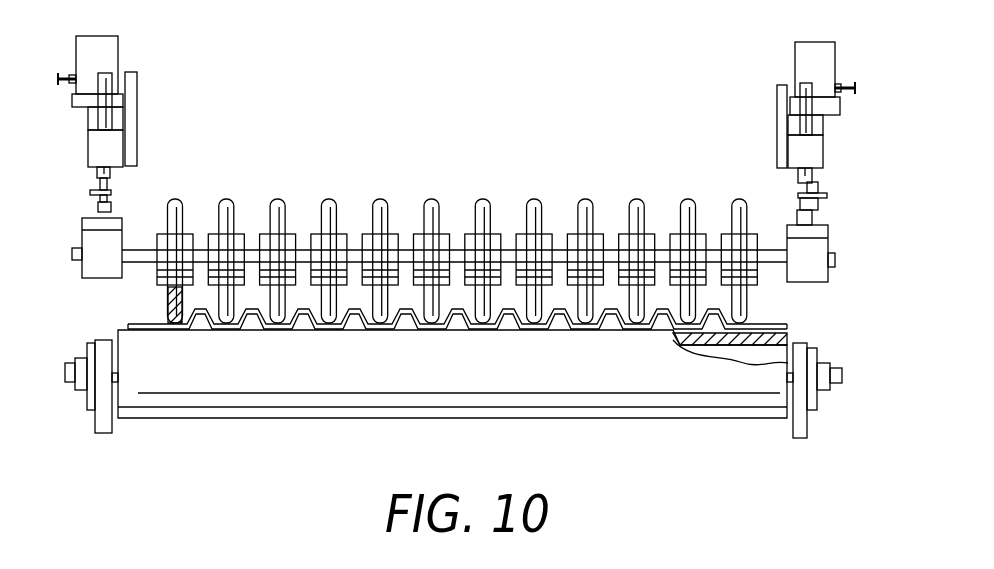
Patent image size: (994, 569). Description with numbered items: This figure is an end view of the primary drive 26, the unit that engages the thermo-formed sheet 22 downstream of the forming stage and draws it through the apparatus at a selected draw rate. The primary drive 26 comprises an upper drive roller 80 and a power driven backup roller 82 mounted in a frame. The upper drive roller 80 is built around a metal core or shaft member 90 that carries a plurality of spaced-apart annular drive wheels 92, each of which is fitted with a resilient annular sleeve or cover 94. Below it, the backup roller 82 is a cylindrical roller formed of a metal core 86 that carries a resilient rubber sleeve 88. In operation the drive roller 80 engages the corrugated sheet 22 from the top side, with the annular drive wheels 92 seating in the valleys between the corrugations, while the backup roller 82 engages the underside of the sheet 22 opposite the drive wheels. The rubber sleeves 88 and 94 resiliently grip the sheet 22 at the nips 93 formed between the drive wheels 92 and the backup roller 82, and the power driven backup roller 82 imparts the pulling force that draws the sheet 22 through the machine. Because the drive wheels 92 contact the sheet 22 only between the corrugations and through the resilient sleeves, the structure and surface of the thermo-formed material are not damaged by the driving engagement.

The primary drive 26 is at (572, 186).
The upper drive roller 80 is at (391, 208).
The power driven backup roller 82 is at (281, 378).
The metal core 86 is at (807, 345).
The resilient sleeve 88 is at (793, 333).
The shaft member 90 is at (145, 240).
The annular drive wheel 92 is at (186, 297).
The nip 93 is at (385, 332).
The resilient annular sleeve 94 is at (168, 306).
The sheet 22 is at (767, 327).